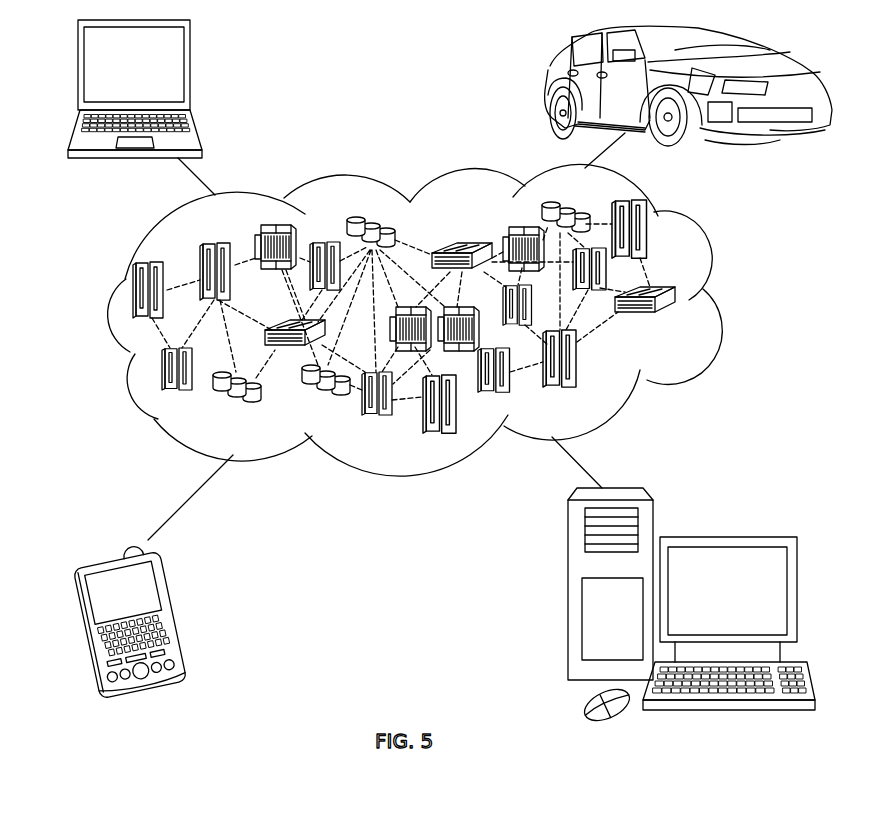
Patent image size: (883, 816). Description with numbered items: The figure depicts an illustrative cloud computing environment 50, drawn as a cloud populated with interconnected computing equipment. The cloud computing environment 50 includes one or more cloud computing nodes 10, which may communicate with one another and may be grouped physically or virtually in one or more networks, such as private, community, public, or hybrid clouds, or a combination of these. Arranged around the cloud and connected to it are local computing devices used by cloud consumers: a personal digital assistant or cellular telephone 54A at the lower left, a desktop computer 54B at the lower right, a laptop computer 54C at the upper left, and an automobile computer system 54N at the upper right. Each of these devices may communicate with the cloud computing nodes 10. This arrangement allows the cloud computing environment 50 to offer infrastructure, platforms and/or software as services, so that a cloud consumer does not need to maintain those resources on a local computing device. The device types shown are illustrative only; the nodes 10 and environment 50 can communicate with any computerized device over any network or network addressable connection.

The cloud computing node 10 is at (678, 323).
The cloud computing environment 50 is at (728, 298).
The personal digital assistant or cellular telephone 54A is at (182, 614).
The desktop computer 54B is at (727, 537).
The laptop computer 54C is at (191, 72).
The automobile computer system 54N is at (547, 85).